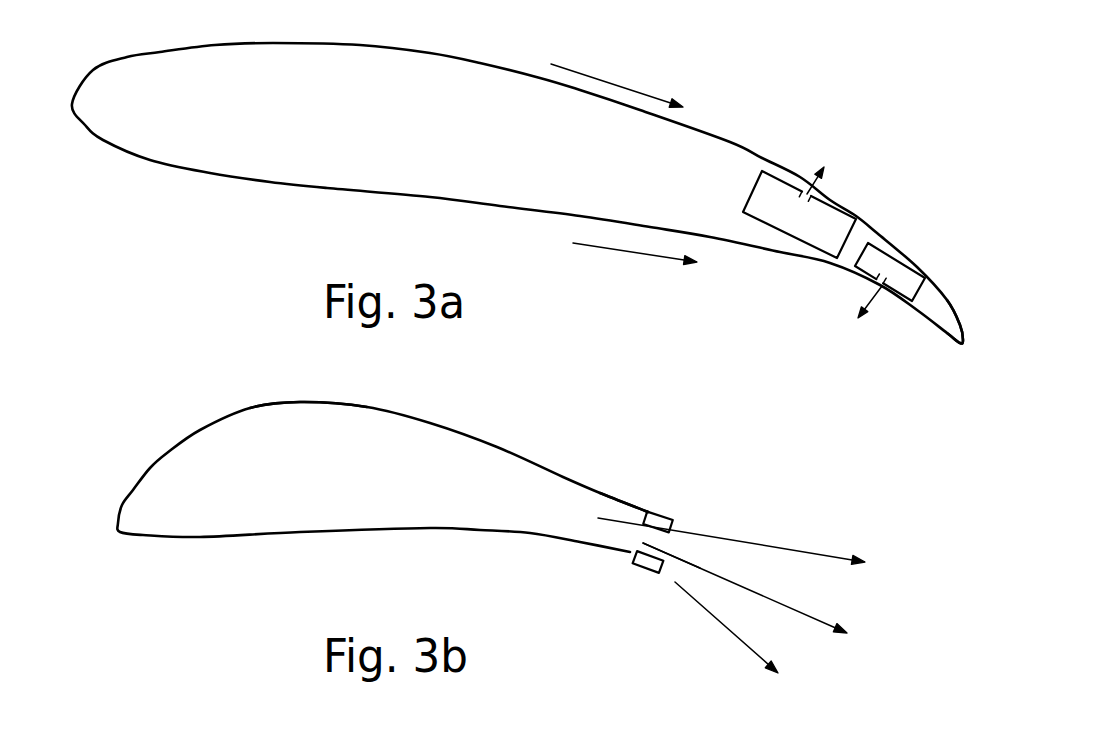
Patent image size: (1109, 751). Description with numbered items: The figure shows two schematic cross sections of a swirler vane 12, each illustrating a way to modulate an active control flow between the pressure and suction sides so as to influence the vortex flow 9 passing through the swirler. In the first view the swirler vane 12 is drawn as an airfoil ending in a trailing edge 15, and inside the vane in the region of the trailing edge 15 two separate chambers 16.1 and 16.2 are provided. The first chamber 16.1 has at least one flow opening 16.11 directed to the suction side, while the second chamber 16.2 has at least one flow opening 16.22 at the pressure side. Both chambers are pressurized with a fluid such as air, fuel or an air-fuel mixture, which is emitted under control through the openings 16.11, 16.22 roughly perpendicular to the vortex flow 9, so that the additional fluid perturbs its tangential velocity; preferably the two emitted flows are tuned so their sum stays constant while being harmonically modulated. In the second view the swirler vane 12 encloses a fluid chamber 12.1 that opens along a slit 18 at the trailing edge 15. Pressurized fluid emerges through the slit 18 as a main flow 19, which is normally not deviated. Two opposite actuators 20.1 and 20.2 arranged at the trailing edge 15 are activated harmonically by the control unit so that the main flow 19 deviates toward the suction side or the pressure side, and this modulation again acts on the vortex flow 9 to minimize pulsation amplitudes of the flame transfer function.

In FIG. 3A, the vortex flow 9 is at (603, 79).
In FIG. 3A, the swirler vane 12 is at (212, 172).
In FIG. 3B, the swirler vane 12 is at (207, 540).
In FIG. 3B, the fluid chamber 12.1 is at (412, 494).
In FIG. 3A, the trailing edge 15 is at (970, 360).
In FIG. 3B, the trailing edge 15 is at (682, 486).
In FIG. 3A, the first chamber 16.1 is at (792, 226).
In FIG. 3A, the flow opening of the first chamber 16.11 is at (806, 187).
In FIG. 3A, the second chamber 16.2 is at (893, 268).
In FIG. 3A, the flow opening of the second chamber 16.22 is at (881, 292).
In FIG. 3B, the slit 18 is at (667, 543).
In FIG. 3B, the main flow 19 is at (740, 595).
In FIG. 3B, the first actuator 20.1 is at (650, 565).
In FIG. 3B, the second actuator 20.2 is at (660, 514).